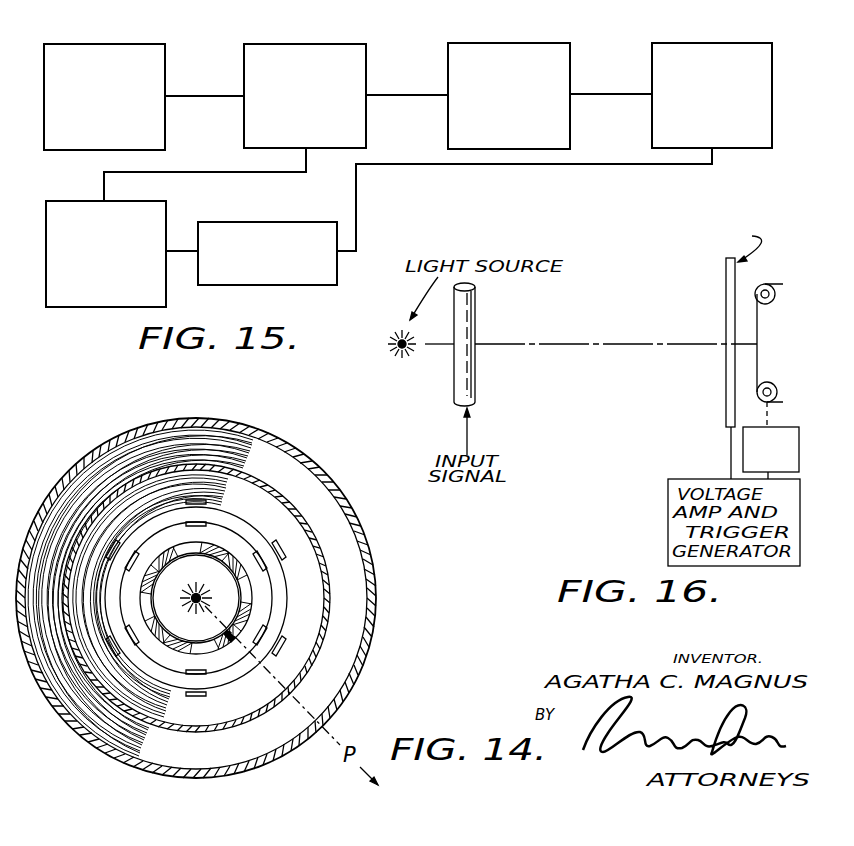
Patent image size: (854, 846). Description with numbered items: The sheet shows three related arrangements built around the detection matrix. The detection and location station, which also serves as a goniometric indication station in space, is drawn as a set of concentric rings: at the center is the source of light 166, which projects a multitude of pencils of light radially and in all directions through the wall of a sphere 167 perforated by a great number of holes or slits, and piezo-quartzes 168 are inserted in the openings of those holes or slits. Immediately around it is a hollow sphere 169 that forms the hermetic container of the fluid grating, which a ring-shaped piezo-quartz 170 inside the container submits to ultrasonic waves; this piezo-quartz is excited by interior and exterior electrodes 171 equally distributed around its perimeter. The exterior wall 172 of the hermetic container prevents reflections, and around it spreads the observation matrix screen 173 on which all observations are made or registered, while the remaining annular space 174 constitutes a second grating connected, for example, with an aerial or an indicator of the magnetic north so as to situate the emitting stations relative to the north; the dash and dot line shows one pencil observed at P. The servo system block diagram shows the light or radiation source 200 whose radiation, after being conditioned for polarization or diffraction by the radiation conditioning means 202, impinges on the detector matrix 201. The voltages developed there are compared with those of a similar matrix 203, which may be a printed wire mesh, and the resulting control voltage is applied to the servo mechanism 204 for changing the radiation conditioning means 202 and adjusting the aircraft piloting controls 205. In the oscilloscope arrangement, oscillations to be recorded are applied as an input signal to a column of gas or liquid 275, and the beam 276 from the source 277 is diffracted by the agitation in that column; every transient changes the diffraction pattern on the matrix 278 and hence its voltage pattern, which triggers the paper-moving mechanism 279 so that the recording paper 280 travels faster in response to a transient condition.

In FIG. 15, the light or radiation source 200 is at (104, 76).
In FIG. 15, the detector matrix 201 is at (509, 80).
In FIG. 15, the radiation conditioning means 202 is at (305, 80).
In FIG. 15, the matrix 203 is at (712, 77).
In FIG. 15, the servo mechanism 204 is at (267, 236).
In FIG. 15, the aircraft piloting controls 205 is at (135, 246).
In FIG. 14, the source of light 166 is at (164, 643).
In FIG. 14, the sphere 167 is at (338, 581).
In FIG. 14, the piezo-quartzes 168 is at (223, 558).
In FIG. 14, the hollow sphere 169 is at (120, 588).
In FIG. 14, the ring-shaped piezo-quartz 170 is at (263, 598).
In FIG. 14, the interior and exterior electrodes 171 is at (196, 596).
In FIG. 14, the exterior wall 172 is at (242, 598).
In FIG. 14, the observation matrix screen 173 is at (229, 598).
In FIG. 14, the annular space 174 is at (221, 593).
In FIG. 16, the column of gas or liquid 275 is at (502, 344).
In FIG. 16, the beam 276 is at (591, 326).
In FIG. 16, the source 277 is at (392, 364).
In FIG. 16, the matrix 278 is at (701, 353).
In FIG. 16, the paper-moving mechanism 279 is at (773, 414).
In FIG. 16, the recording paper 280 is at (780, 343).